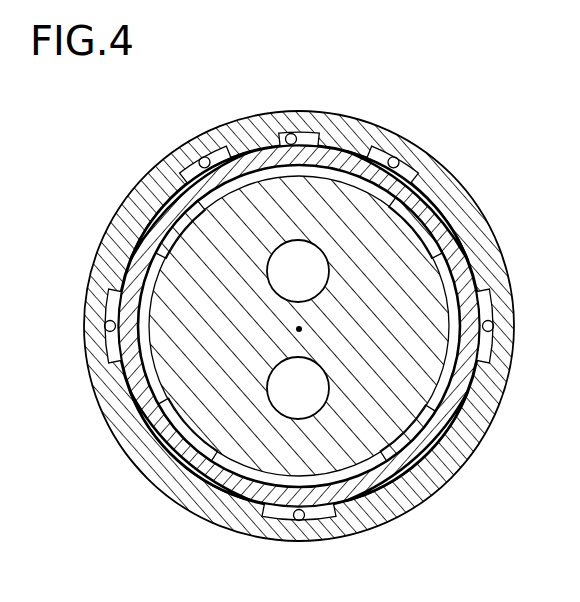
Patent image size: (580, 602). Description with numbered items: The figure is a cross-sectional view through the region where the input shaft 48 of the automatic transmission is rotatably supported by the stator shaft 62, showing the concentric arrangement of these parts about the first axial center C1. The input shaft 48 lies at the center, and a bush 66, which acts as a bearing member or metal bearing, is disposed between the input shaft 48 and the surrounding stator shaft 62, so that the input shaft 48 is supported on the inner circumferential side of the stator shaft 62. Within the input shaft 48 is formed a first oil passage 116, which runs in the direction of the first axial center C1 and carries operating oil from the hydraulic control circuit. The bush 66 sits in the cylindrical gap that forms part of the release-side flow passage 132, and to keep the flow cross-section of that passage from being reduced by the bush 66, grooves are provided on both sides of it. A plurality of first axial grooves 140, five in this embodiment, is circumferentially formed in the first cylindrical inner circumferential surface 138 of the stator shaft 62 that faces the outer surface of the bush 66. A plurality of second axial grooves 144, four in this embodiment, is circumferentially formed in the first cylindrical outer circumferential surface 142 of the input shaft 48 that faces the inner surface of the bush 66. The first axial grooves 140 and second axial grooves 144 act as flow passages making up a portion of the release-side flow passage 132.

The input shaft 48 is at (445, 283).
The stator shaft 62 is at (483, 233).
The bush 66 is at (448, 212).
The first oil passage 116 is at (322, 280).
The release-side flow passage 132 is at (300, 336).
The first cylindrical inner circumferential surface 138 is at (286, 135).
The first axial grooves 140 is at (315, 555).
The first cylindrical outer circumferential surface 142 is at (320, 146).
The second axial grooves 144 is at (470, 500).
The first axial center C1 is at (303, 328).